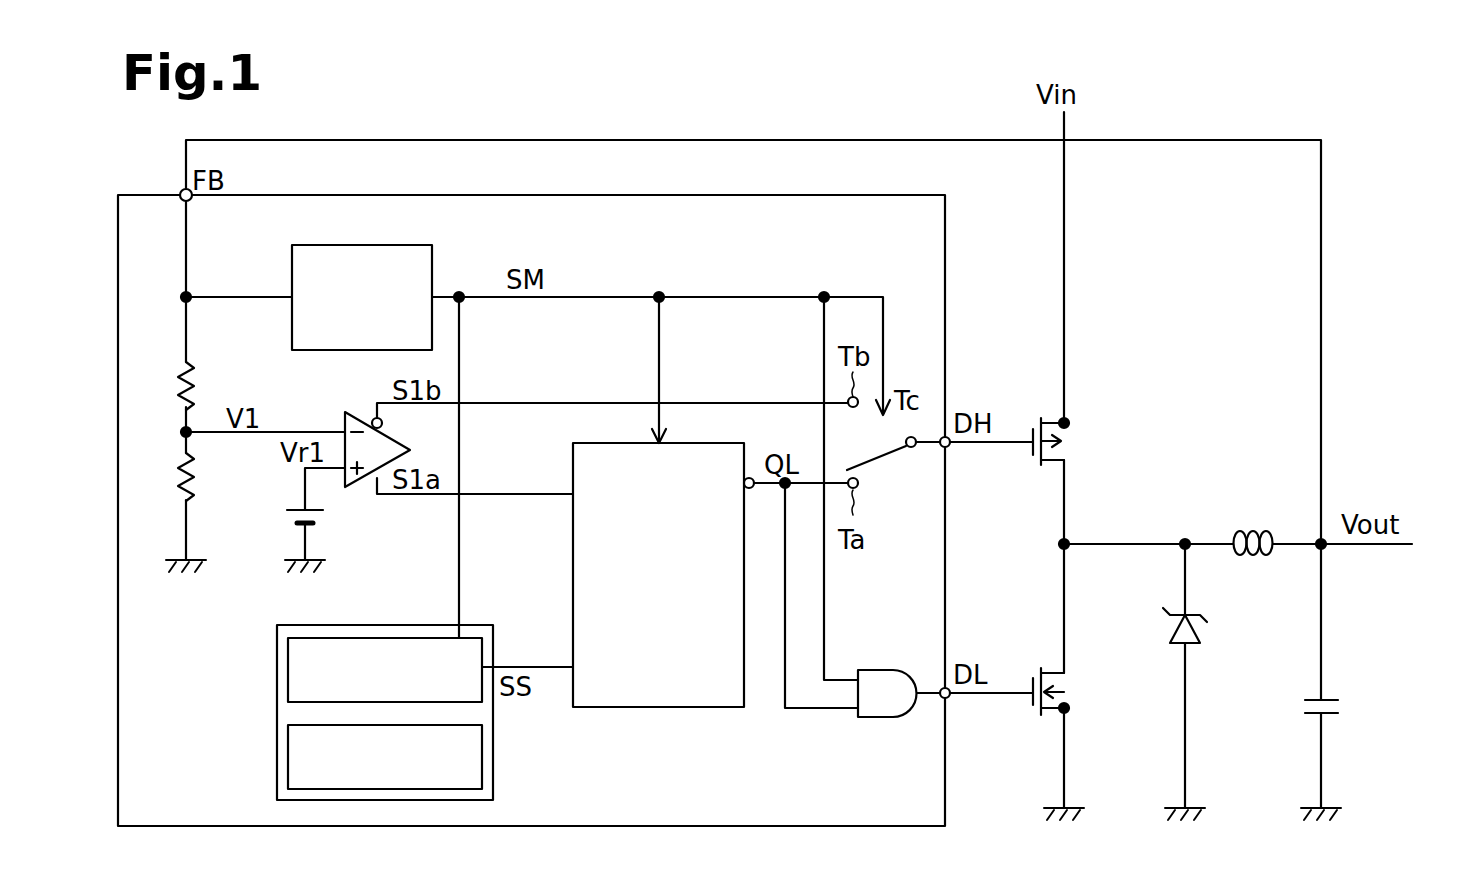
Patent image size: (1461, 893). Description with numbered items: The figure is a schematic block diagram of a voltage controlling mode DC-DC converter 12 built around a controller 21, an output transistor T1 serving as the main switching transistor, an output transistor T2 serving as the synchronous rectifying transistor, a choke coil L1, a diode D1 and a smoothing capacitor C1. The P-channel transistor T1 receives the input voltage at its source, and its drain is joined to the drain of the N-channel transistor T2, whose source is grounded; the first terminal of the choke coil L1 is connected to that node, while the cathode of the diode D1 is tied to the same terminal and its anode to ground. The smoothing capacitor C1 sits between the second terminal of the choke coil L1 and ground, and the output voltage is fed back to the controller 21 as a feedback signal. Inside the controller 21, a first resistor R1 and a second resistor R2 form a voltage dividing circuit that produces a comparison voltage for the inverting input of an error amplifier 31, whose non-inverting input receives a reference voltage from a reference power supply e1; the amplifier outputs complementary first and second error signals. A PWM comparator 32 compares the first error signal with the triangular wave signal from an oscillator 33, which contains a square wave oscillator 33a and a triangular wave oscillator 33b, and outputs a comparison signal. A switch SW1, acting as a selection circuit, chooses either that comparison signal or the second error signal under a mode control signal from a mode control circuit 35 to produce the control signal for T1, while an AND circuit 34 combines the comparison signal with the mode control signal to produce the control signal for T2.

The DC-DC converter 12 is at (1365, 100).
The controller 21 is at (947, 240).
The error amplifier 31 is at (341, 421).
The PWM comparator 32 is at (706, 438).
The oscillator 33 is at (356, 685).
The square wave oscillator 33a is at (288, 756).
The triangular wave oscillator 33b is at (288, 666).
The AND circuit 34 is at (870, 668).
The mode control circuit 35 is at (405, 243).
The first resistor R1 is at (196, 384).
The second resistor R2 is at (196, 476).
The reference power supply e1 is at (313, 525).
The switch SW1 is at (878, 462).
The output transistor T1 is at (1050, 418).
The output transistor T2 is at (1046, 714).
The choke coil L1 is at (1239, 534).
The diode D1 is at (1203, 630).
The smoothing capacitor C1 is at (1310, 700).